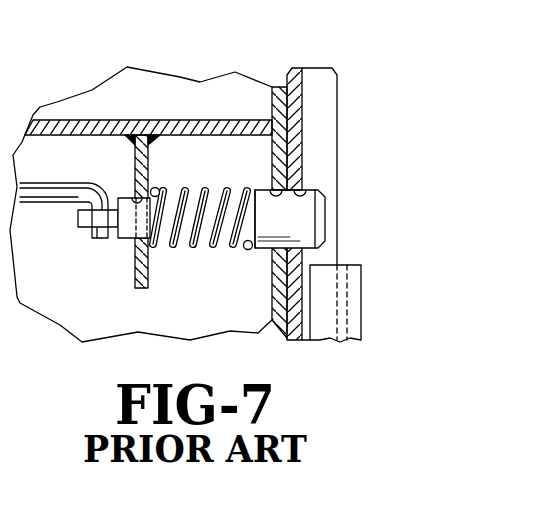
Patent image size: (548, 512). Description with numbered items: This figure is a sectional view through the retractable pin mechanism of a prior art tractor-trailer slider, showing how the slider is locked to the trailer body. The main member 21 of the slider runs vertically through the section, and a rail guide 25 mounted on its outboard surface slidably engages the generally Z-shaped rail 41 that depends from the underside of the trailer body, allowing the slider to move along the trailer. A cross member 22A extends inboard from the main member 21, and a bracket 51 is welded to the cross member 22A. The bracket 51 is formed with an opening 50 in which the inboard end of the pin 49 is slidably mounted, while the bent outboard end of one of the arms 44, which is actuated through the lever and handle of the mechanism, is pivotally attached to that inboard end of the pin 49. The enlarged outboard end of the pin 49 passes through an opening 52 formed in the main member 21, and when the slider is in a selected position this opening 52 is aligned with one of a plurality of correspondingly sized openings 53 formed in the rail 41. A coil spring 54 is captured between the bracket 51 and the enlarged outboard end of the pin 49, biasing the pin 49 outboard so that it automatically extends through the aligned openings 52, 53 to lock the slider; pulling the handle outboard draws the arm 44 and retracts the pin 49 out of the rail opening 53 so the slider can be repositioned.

The cross member 22A is at (68, 101).
The rail 41 is at (296, 96).
The main member 21 is at (250, 297).
The rail guide 25 is at (355, 320).
The arm 44 is at (48, 190).
The opening 50 is at (134, 192).
The bracket 51 is at (134, 283).
The coil spring 54 is at (173, 190).
The opening 52 is at (258, 188).
The opening 53 is at (303, 190).
The pin 49 is at (305, 218).